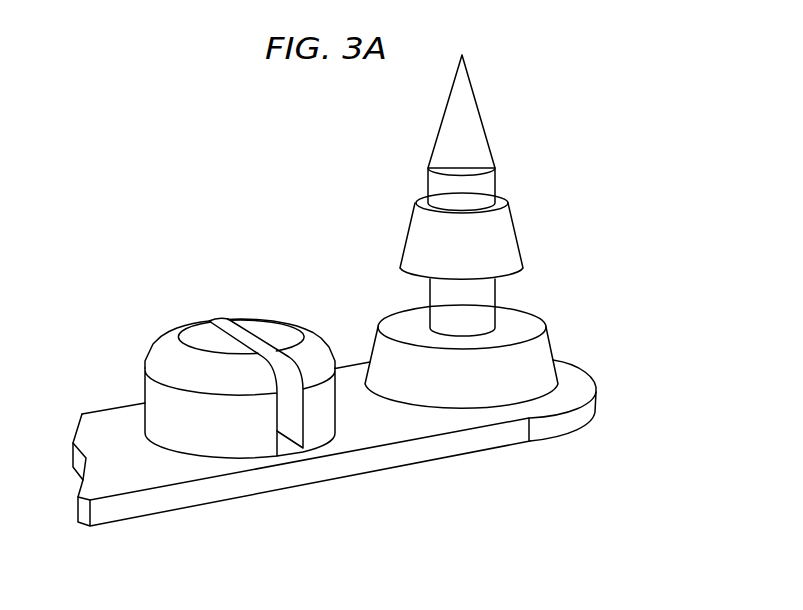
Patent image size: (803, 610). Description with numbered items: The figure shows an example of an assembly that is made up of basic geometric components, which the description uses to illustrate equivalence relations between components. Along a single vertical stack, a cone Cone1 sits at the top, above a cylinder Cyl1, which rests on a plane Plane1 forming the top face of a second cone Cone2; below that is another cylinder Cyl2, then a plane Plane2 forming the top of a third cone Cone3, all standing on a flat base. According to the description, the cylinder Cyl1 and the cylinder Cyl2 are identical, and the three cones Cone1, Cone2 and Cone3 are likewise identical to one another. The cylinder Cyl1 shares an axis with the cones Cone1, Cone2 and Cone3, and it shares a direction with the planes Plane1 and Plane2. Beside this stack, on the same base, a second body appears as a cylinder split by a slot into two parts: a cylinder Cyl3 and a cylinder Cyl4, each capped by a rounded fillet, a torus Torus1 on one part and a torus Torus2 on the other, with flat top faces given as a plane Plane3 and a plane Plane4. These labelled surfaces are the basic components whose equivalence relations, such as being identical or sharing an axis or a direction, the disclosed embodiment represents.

The cone Cone1 is at (487, 123).
The cylinder Cyl1 is at (498, 187).
The plane Plane1 is at (502, 200).
The cone Cone2 is at (518, 238).
The cylinder Cyl2 is at (498, 292).
The plane Plane2 is at (522, 325).
The cone Cone3 is at (552, 348).
The cylinder Cyl3 is at (145, 393).
The cylinder Cyl4 is at (340, 403).
The torus Torus1 is at (148, 343).
The torus Torus2 is at (315, 328).
The plane Plane3 is at (197, 337).
The plane Plane4 is at (262, 325).